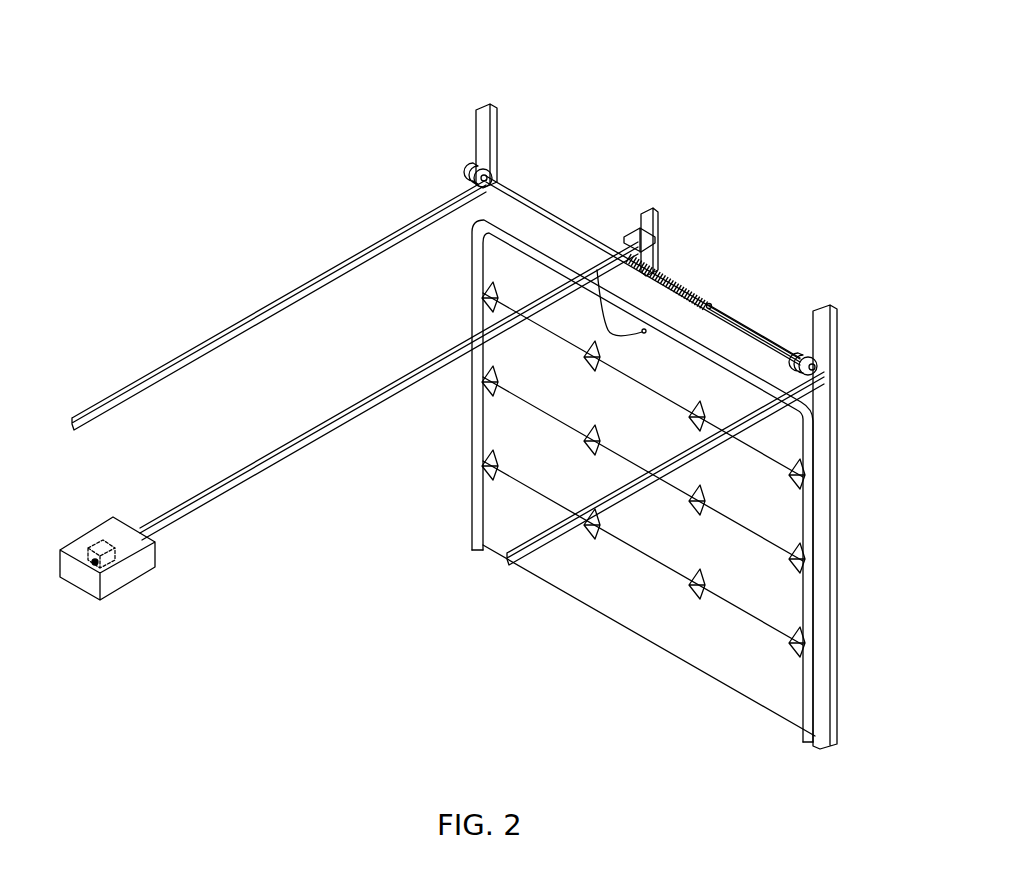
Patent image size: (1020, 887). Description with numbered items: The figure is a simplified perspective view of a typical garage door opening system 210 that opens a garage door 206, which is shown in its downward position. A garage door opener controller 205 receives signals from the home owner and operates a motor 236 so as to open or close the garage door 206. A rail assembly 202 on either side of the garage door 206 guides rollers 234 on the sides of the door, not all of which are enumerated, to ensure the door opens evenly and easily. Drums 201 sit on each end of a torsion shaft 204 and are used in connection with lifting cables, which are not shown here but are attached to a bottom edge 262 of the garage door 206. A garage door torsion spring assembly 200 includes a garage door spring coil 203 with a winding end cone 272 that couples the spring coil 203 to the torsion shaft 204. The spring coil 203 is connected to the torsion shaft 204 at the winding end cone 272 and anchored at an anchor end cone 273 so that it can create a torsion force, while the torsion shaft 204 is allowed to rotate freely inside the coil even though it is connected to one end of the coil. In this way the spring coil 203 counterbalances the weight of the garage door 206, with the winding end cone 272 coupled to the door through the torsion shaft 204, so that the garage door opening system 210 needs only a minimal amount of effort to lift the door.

The garage door torsion spring assembly 200 is at (681, 240).
The drums 201 is at (470, 170).
The rail assembly 202 is at (188, 352).
The garage door spring coil 203 is at (688, 272).
The torsion shaft 204 is at (741, 318).
The garage door opener controller 205 is at (135, 548).
The garage door 206 is at (643, 485).
The garage door opening system 210 is at (578, 80).
The rollers 234 is at (481, 294).
The motor 236 is at (100, 532).
The bottom edge 262 is at (737, 687).
The winding end cone 272 is at (717, 304).
The anchor end cone 273 is at (632, 234).